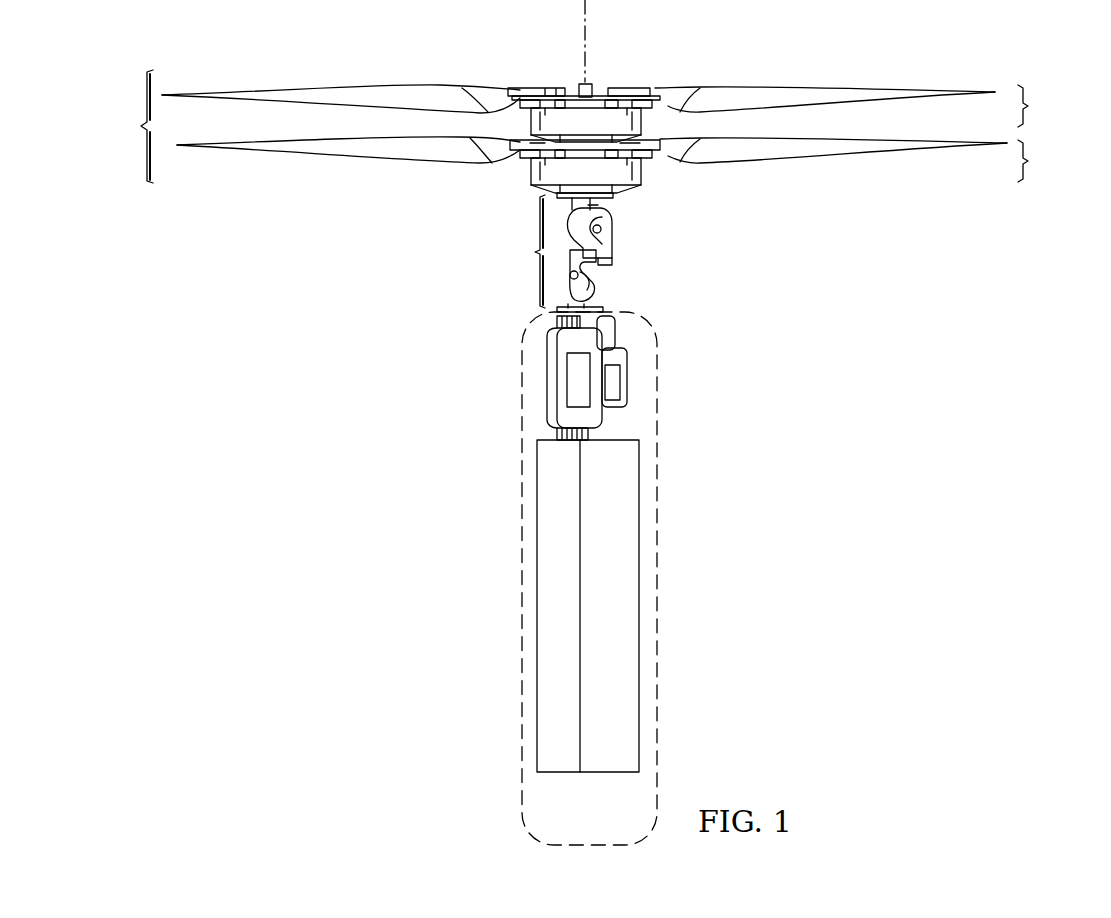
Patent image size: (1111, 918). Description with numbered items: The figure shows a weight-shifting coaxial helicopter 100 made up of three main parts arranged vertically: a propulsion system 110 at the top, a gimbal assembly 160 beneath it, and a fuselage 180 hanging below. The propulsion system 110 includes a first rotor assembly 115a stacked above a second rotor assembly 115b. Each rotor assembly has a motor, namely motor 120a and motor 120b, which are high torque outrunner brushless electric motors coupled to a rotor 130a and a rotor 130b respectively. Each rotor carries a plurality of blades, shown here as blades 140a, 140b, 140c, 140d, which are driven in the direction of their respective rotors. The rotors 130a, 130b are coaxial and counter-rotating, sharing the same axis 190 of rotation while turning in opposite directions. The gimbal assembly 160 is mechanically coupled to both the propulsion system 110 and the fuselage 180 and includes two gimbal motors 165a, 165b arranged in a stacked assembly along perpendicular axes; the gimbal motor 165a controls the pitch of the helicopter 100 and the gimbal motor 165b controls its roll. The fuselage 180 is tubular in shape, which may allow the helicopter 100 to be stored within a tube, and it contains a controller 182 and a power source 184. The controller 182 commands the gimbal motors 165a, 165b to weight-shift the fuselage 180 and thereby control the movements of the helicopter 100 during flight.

The weight-shifting coaxial helicopter 100 is at (208, 741).
The propulsion system 110 is at (126, 126).
The first rotor assembly 115a is at (626, 89).
The second rotor assembly 115b is at (634, 175).
The motor 120a is at (611, 100).
The motor 120b is at (530, 173).
The rotor 130a is at (519, 110).
The rotor 130b is at (653, 170).
The blade 140a is at (428, 88).
The blade 140b is at (843, 88).
The blade 140c is at (341, 160).
The blade 140d is at (849, 160).
The gimbal assembly 160 is at (587, 252).
The gimbal motor 165a is at (610, 229).
The gimbal motor 165b is at (604, 270).
The fuselage 180 is at (596, 578).
The controller 182 is at (547, 392).
The power source 184 is at (596, 772).
The axis 190 is at (582, 66).